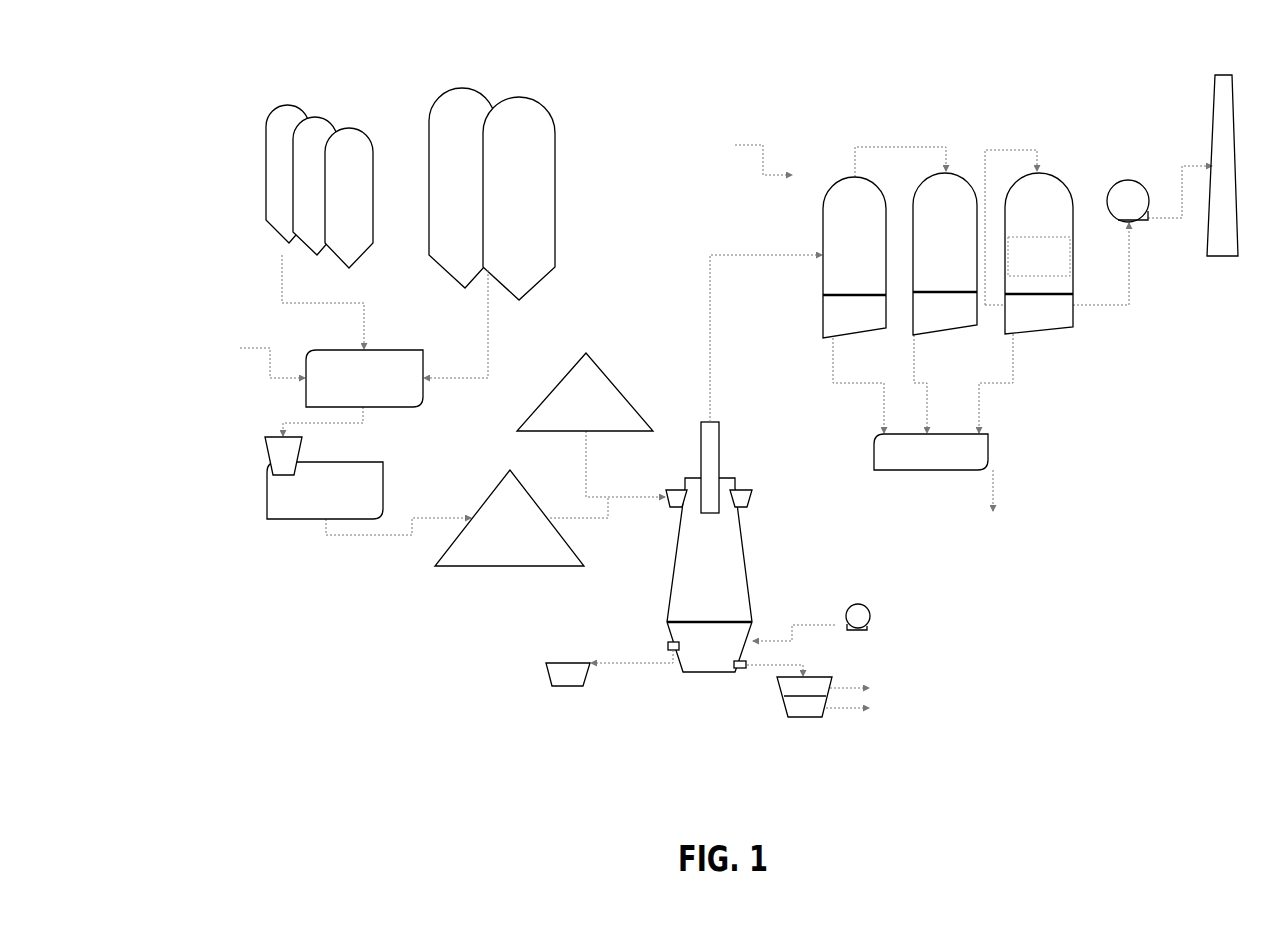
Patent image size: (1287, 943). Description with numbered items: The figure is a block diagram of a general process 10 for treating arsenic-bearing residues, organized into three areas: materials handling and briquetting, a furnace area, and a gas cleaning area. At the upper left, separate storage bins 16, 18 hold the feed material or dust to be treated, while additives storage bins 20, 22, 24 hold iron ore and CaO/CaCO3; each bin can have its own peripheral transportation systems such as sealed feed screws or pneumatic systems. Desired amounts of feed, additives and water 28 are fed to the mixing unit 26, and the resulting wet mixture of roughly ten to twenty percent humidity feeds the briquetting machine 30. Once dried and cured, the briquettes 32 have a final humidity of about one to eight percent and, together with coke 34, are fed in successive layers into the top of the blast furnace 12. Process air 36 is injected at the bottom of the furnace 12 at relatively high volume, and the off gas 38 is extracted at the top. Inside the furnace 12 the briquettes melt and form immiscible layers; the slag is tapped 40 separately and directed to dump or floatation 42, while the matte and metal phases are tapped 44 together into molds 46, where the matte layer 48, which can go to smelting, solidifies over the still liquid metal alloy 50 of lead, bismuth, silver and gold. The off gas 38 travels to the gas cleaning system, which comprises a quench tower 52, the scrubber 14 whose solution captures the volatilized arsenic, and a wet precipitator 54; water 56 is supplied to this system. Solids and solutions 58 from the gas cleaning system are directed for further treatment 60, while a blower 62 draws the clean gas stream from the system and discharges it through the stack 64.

The process 10 is at (1126, 76).
The blast furnace 12 is at (747, 577).
The scrubber 14 is at (956, 173).
The bin 16 is at (481, 93).
The bin 18 is at (541, 103).
The additives storage 20 is at (299, 107).
The additives storage 22 is at (329, 120).
The additives storage 24 is at (363, 131).
The mixing unit 26 is at (424, 365).
The water 28 is at (259, 359).
The briquetting machine 30 is at (384, 472).
The briquettes 32 is at (531, 495).
The coke 34 is at (623, 395).
The process air 36 is at (871, 619).
The off gas 38 is at (751, 338).
The slag tap 40 is at (632, 653).
The dump or floatation 42 is at (548, 677).
The matte and metal tap 44 is at (775, 659).
The molds 46 is at (783, 696).
The matte layer 48 is at (864, 690).
The metal alloy 50 is at (862, 712).
The quench tower 52 is at (887, 198).
The wet precipitator 54 is at (1056, 173).
The water 56 is at (750, 155).
The solids and solutions 58 is at (989, 453).
The further treatment 60 is at (995, 505).
The blower 62 is at (1143, 183).
The stack 64 is at (1235, 123).